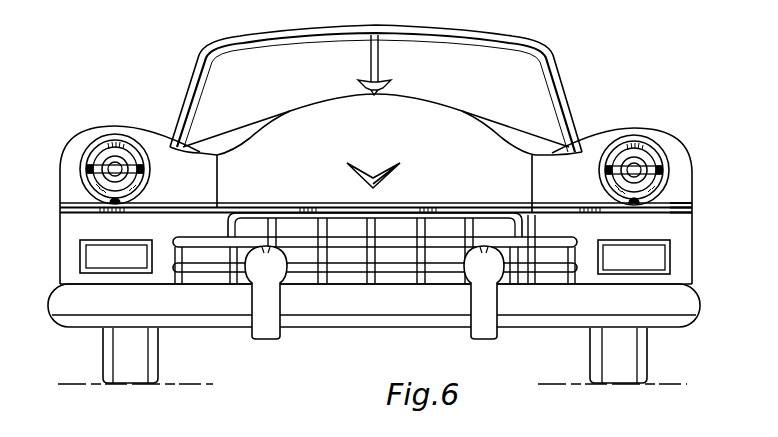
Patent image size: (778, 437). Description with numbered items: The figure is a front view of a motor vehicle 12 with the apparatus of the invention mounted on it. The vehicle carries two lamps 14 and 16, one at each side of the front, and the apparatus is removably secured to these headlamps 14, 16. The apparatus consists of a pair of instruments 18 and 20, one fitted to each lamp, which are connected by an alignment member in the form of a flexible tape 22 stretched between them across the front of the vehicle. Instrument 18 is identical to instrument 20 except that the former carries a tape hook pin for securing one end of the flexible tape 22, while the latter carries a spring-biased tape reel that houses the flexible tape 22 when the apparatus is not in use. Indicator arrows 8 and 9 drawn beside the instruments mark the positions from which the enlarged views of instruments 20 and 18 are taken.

The motor vehicle 12 is at (552, 43).
The lamp 14 is at (100, 152).
The lamp 16 is at (633, 147).
The instrument 18 is at (56, 210).
The instrument 20 is at (673, 213).
The flexible tape 22 is at (292, 213).
The section line 8- 8 is at (558, 152).
The section line 9- 9 is at (134, 91).